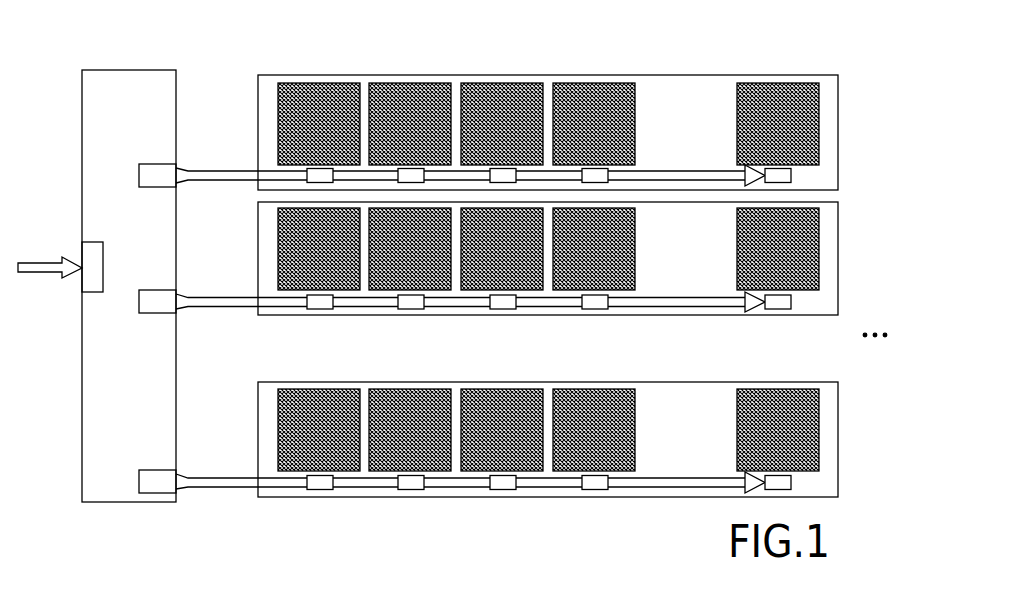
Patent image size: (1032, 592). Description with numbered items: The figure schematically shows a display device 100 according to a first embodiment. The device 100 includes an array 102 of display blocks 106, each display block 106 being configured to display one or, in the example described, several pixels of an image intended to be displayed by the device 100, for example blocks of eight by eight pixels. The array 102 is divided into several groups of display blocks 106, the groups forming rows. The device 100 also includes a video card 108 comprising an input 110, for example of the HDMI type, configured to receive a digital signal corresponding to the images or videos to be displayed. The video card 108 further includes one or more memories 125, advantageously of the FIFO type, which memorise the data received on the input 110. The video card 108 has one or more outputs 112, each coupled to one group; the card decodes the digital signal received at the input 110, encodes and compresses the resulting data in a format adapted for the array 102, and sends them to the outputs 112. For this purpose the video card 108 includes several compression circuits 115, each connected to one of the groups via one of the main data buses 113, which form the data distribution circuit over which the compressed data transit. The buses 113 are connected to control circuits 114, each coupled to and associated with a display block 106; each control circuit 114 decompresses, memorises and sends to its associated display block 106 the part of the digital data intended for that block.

The display device 100 is at (232, 40).
The array 102 is at (833, 58).
The display block 106 is at (442, 452).
The video card 108 is at (132, 70).
The input 110 is at (78, 276).
The output 112 is at (180, 170).
The main data bus 113 is at (222, 488).
The control circuit 114 is at (595, 483).
The compression circuit 115 is at (158, 172).
The memory 125 is at (92, 250).